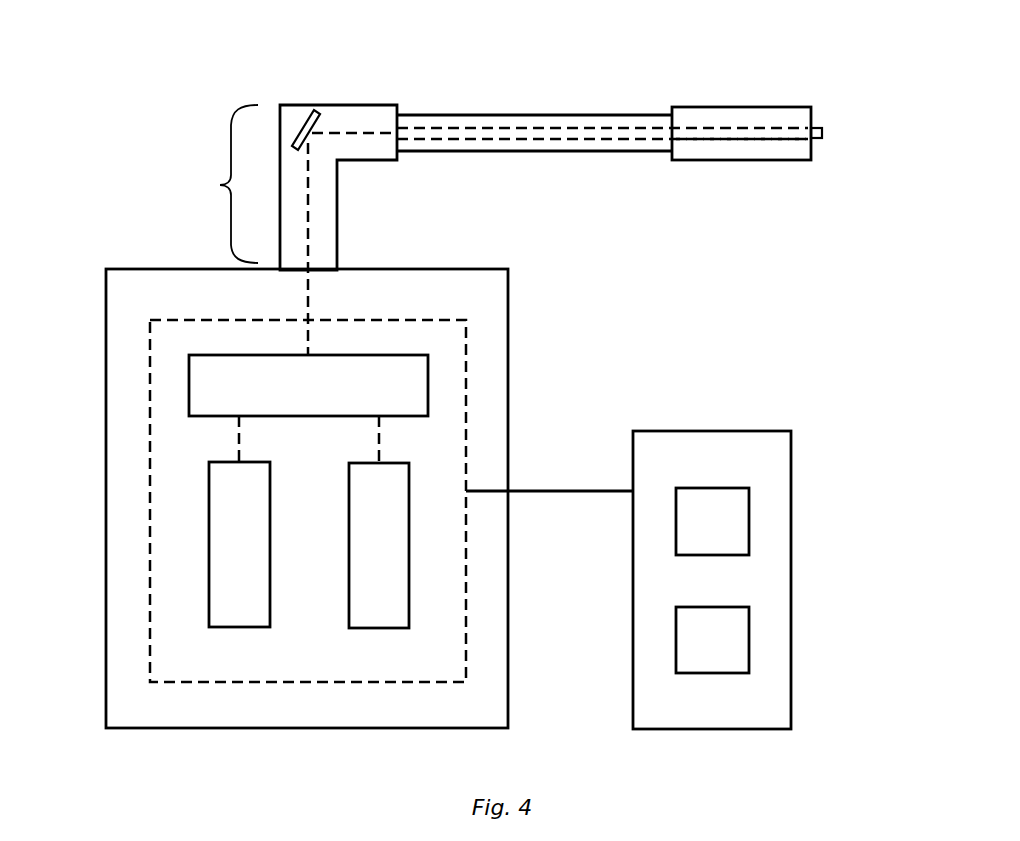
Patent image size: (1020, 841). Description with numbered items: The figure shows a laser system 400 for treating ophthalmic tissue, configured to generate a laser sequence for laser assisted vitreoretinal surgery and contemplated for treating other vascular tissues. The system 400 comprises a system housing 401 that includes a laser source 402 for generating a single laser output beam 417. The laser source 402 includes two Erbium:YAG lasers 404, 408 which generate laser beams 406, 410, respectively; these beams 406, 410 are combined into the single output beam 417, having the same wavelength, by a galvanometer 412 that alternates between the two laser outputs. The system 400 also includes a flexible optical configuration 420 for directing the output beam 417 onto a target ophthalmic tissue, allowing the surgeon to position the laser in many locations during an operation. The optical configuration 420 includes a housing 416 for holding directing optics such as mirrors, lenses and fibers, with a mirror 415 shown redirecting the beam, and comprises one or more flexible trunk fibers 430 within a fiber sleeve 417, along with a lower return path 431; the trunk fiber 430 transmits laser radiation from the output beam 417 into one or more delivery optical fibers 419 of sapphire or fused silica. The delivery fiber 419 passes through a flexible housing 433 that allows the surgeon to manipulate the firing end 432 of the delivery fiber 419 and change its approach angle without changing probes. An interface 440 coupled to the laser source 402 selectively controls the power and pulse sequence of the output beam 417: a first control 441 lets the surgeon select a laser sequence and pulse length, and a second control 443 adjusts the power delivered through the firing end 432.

The laser system 400 is at (178, 68).
The system housing 401 is at (508, 352).
The laser source 402 is at (466, 585).
The Erbium:YAG laser 404 is at (209, 542).
The laser beam 406 is at (238, 440).
The Erbium:YAG laser 408 is at (409, 615).
The laser beam 410 is at (379, 438).
The galvanometer 412 is at (213, 355).
The mirror 415 is at (310, 142).
The housing for directing optics 416 is at (303, 104).
The laser output beam 417 is at (567, 115).
The delivery optical fiber 419 is at (747, 142).
The optical configuration 420 is at (215, 184).
The flexible trunk fiber 430 is at (482, 128).
The reflected beam 431 is at (639, 150).
The firing end 432 is at (822, 133).
The flexible housing 433 is at (737, 107).
The interface 440 is at (702, 431).
The first control 441 is at (749, 523).
The second control 443 is at (749, 642).